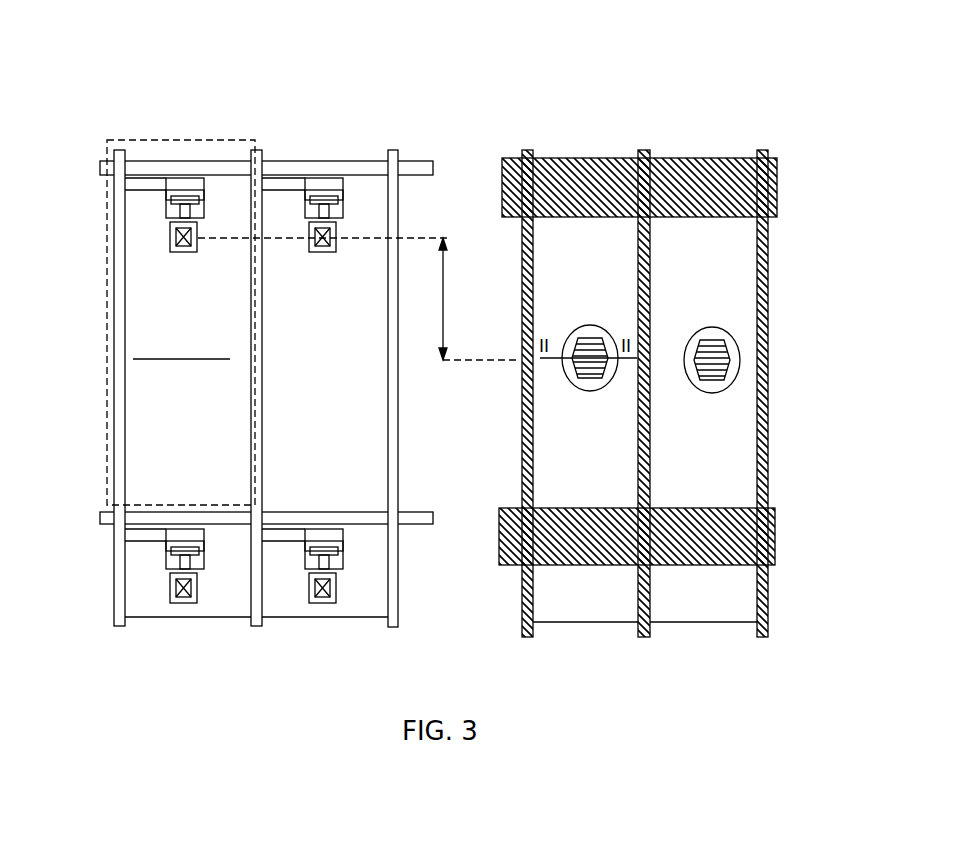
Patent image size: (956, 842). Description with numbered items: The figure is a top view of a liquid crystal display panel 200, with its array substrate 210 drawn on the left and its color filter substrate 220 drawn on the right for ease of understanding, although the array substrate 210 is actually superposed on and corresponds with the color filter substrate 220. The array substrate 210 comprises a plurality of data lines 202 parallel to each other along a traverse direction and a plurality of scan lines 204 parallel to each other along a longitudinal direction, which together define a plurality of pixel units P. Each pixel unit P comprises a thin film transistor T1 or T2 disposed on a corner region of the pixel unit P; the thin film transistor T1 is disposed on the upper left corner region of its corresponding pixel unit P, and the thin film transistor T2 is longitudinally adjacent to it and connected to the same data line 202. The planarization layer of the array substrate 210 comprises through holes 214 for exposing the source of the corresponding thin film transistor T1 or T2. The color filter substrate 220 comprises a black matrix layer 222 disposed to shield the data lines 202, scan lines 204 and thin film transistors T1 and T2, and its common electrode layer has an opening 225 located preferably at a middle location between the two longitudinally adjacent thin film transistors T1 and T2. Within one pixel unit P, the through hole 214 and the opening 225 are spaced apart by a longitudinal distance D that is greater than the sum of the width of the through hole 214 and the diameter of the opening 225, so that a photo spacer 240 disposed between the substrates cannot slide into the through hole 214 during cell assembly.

The liquid crystal display panel 200 is at (111, 33).
The data line 202 is at (113, 565).
The scan line 204 is at (425, 161).
The array substrate 210 is at (295, 160).
The through hole 214 is at (172, 234).
The color filter substrate 220 is at (678, 376).
The black matrix layer 222 is at (777, 178).
The opening 225 is at (730, 328).
The photo spacer 240 is at (587, 376).
The pixel unit P is at (145, 140).
The thin film transistor T1 is at (204, 189).
The thin film transistor T2 is at (204, 540).
The longitudinal distance D is at (359, 299).